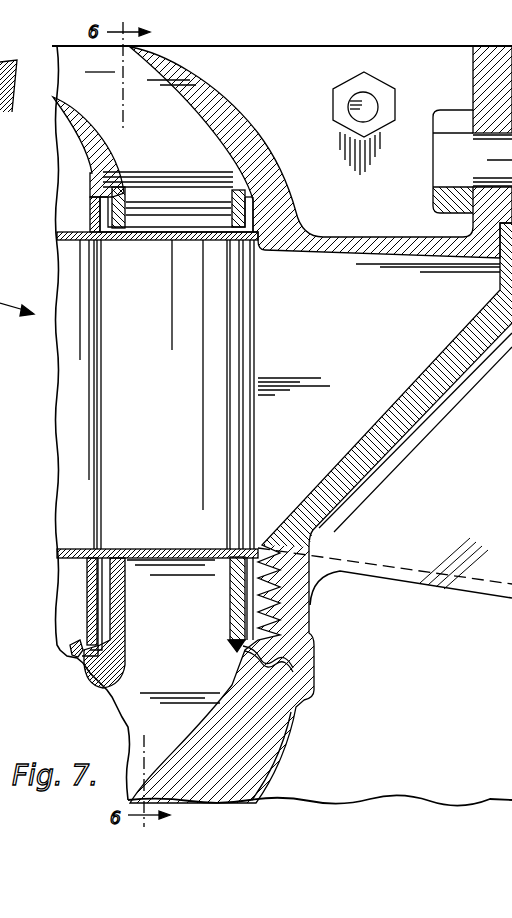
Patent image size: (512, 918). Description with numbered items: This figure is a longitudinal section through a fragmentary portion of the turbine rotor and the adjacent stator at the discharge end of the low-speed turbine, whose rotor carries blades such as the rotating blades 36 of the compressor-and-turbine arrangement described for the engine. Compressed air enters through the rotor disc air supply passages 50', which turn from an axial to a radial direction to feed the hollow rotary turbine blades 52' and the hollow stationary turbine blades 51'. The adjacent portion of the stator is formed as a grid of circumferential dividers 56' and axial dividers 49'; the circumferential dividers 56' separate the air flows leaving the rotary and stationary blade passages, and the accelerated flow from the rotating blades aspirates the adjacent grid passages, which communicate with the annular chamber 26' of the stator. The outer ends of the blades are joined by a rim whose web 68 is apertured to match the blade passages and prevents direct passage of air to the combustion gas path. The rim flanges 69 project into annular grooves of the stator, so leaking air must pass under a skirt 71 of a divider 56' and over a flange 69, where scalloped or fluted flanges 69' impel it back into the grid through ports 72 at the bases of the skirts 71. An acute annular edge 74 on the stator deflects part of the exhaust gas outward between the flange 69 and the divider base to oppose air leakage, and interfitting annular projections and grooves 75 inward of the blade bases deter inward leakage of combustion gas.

The annular chamber 26' is at (321, 513).
The rotating blades 36 is at (434, 673).
The axial dividers 49' is at (286, 140).
The rotor disc air supply passages 50' is at (178, 630).
The hollow stationary turbine blades 51' is at (263, 426).
The rotary turbine blades 52' is at (167, 394).
The circumferential dividers 56' is at (265, 159).
The web 68 is at (127, 240).
The edge flanges 69 is at (295, 198).
The fluted flanges 69' is at (51, 640).
The skirt 71 is at (183, 200).
The ports 72 is at (118, 196).
The annular edge 74 is at (262, 250).
The interfitting annular projections and grooves 75 is at (292, 657).